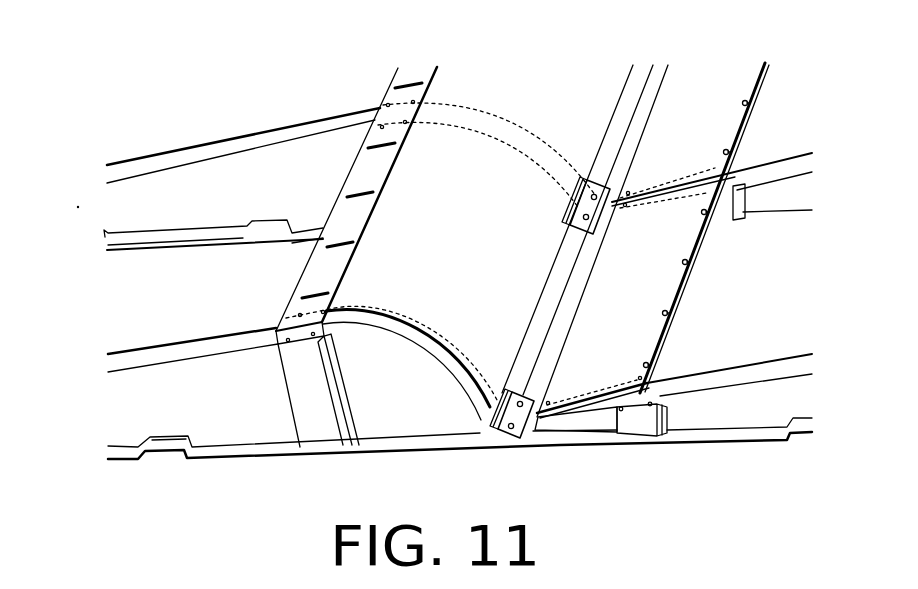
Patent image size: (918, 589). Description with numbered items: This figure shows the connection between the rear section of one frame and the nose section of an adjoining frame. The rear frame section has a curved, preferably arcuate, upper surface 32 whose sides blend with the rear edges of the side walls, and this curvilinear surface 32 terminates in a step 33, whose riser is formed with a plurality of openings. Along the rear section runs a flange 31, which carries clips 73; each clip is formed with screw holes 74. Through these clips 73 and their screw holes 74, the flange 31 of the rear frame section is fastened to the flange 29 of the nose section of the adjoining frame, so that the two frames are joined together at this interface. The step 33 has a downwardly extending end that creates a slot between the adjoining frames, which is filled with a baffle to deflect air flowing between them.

The flange of the nose section 29 is at (567, 310).
The flange of the rear section 31 is at (568, 257).
The curved upper surface 32 is at (438, 230).
The step 33 is at (347, 217).
The clips 73 is at (600, 185).
The screw holes 74 is at (594, 190).